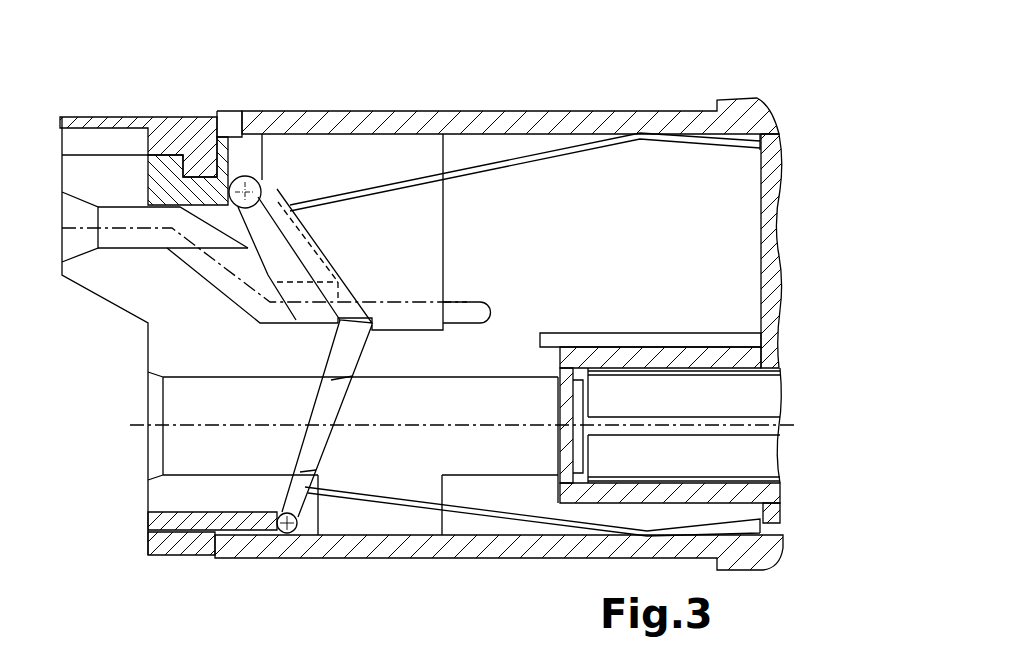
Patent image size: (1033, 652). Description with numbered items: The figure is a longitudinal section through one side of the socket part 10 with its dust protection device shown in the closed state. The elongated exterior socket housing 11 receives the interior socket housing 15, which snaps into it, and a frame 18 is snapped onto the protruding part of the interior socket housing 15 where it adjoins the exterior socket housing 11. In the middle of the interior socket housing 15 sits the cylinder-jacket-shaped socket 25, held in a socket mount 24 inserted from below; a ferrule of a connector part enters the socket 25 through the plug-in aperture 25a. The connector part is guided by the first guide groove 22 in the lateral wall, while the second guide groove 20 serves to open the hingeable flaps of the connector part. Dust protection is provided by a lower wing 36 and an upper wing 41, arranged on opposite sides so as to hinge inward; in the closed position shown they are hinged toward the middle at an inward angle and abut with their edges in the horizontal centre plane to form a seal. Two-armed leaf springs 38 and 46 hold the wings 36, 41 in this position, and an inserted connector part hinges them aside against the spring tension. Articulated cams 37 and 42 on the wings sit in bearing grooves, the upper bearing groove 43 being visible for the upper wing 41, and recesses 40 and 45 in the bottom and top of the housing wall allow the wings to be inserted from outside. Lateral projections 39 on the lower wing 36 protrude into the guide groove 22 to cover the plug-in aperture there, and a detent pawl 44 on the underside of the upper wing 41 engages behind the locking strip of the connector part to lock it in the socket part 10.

The socket part 10 is at (654, 79).
The exterior socket housing 11 is at (456, 118).
The interior socket housing 15 is at (779, 247).
The frame 18 is at (178, 137).
The second guide groove 20 is at (122, 238).
The first guide groove 22 is at (192, 452).
The socket mount 24 is at (770, 504).
The socket 25 is at (763, 376).
The plug-in aperture 25a is at (570, 410).
The lower wing 36 is at (299, 507).
The articulated cam 37 is at (282, 533).
The leaf spring 38 is at (520, 517).
The projection 39 is at (318, 442).
The recess 40 is at (405, 520).
The upper wing 41 is at (326, 258).
The articulated cam 42 is at (263, 183).
The upper bearing groove 43 is at (243, 150).
The detent pawl 44 is at (295, 293).
The recess 45 is at (430, 240).
The leaf spring 46 is at (555, 158).